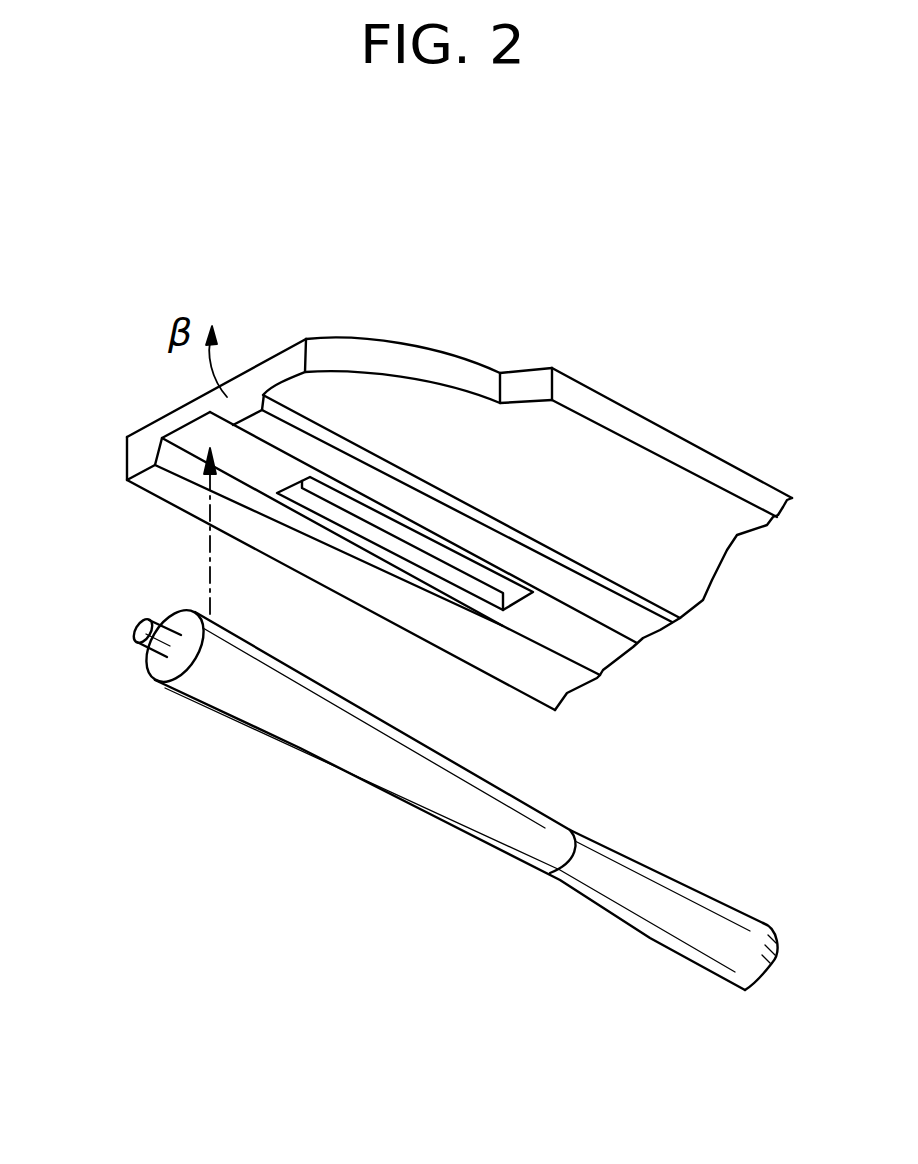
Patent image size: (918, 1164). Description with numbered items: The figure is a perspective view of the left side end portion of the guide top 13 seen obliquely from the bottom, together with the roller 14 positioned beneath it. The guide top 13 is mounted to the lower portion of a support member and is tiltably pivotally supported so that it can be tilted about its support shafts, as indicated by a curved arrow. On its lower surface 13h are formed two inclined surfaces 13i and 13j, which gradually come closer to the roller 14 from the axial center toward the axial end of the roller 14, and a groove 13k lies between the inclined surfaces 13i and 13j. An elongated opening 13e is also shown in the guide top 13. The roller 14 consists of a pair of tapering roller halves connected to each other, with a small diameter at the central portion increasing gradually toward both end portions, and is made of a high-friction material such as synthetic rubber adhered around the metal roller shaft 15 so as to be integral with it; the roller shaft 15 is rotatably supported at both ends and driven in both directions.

The guide top 13 is at (708, 448).
The lower surface 13h is at (393, 407).
The inclined surface 13i is at (282, 437).
The groove 13k is at (190, 435).
The inclined surface 13j is at (163, 488).
The slot 13e is at (392, 528).
The roller 14 is at (367, 763).
The roller shaft 15 is at (147, 657).